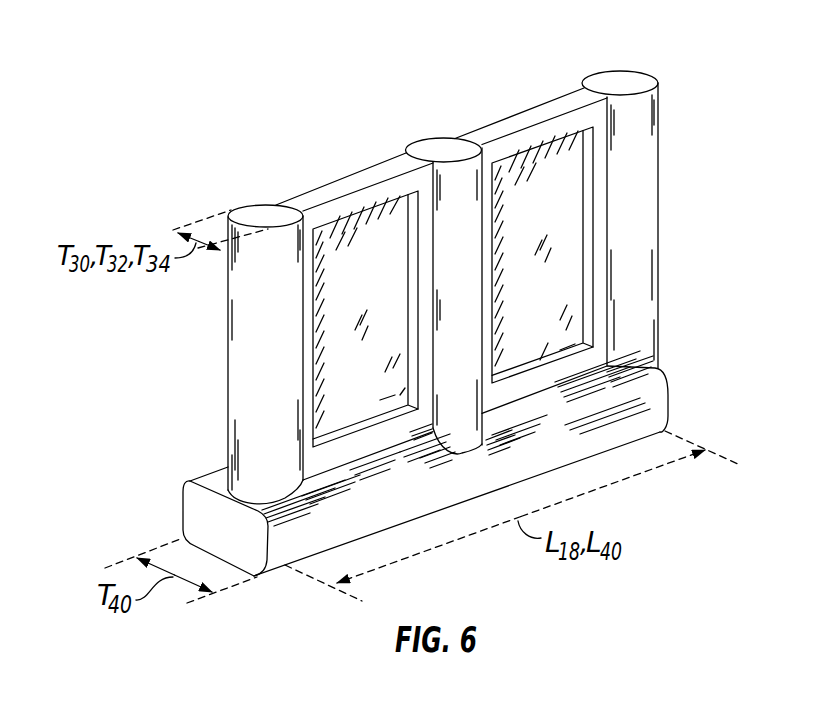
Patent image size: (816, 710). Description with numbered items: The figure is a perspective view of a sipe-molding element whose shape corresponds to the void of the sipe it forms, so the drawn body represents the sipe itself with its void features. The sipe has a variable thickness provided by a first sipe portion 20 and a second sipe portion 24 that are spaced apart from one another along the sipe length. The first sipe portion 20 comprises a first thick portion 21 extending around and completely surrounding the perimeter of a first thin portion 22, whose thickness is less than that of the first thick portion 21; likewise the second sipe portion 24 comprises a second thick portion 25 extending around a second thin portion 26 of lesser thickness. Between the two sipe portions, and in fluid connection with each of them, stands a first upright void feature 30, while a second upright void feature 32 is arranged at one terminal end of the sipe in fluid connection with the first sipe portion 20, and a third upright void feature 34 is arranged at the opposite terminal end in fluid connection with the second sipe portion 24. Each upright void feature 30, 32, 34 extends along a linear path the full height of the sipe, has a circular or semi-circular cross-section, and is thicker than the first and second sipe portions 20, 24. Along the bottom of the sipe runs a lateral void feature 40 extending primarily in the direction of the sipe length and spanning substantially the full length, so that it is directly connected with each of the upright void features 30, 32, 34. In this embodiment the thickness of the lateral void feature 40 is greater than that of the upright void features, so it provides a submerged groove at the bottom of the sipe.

The first sipe portion 20 is at (358, 166).
The first thick portion 21 is at (360, 202).
The first thin portion 22 is at (378, 397).
The second sipe portion 24 is at (551, 91).
The second thick portion 25 is at (537, 137).
The second thin portion 26 is at (557, 330).
The first upright void feature 30 is at (443, 148).
The second upright void feature 32 is at (264, 213).
The third upright void feature 34 is at (622, 85).
The lateral void feature 40 is at (588, 437).